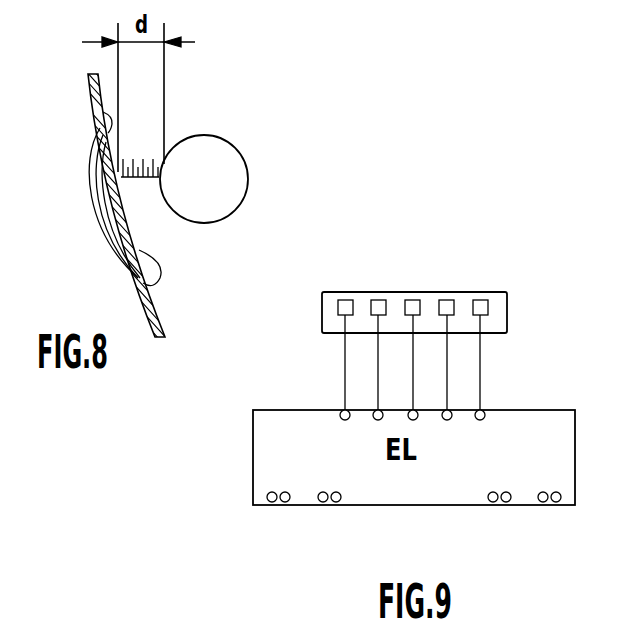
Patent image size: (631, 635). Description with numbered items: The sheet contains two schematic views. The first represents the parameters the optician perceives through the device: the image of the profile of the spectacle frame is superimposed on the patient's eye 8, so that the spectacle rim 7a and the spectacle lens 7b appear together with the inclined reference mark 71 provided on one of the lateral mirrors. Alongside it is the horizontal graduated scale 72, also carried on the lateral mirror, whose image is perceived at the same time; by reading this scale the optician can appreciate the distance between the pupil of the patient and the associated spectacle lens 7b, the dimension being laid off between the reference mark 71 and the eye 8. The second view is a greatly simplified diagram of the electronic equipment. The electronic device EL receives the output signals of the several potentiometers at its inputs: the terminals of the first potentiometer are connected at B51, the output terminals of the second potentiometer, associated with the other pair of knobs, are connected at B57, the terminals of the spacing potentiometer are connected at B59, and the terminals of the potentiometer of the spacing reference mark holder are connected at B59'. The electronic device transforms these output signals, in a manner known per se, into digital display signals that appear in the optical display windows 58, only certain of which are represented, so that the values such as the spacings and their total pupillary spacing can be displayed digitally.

In FIG. 8, the inclined reference mark 71 is at (93, 100).
In FIG. 8, the horizontal graduated scale 72 is at (136, 170).
In FIG. 8, the eye 8 is at (236, 179).
In FIG. 8, the spectacle rim 7a is at (118, 201).
In FIG. 8, the spectacle lens 7b is at (96, 196).
In FIG. 9, the optical display window 58 is at (480, 299).
In FIG. 9, the input of electronic device for potentiometer 51 B51 is at (288, 508).
In FIG. 9, the input of electronic device for potentiometer 57 B57 is at (339, 508).
In FIG. 9, the input of electronic device for potentiometer terminals 60 B59 is at (491, 522).
In FIG. 9, the input of electronic device for spacing reference mark holder potentiometer B59' is at (548, 522).